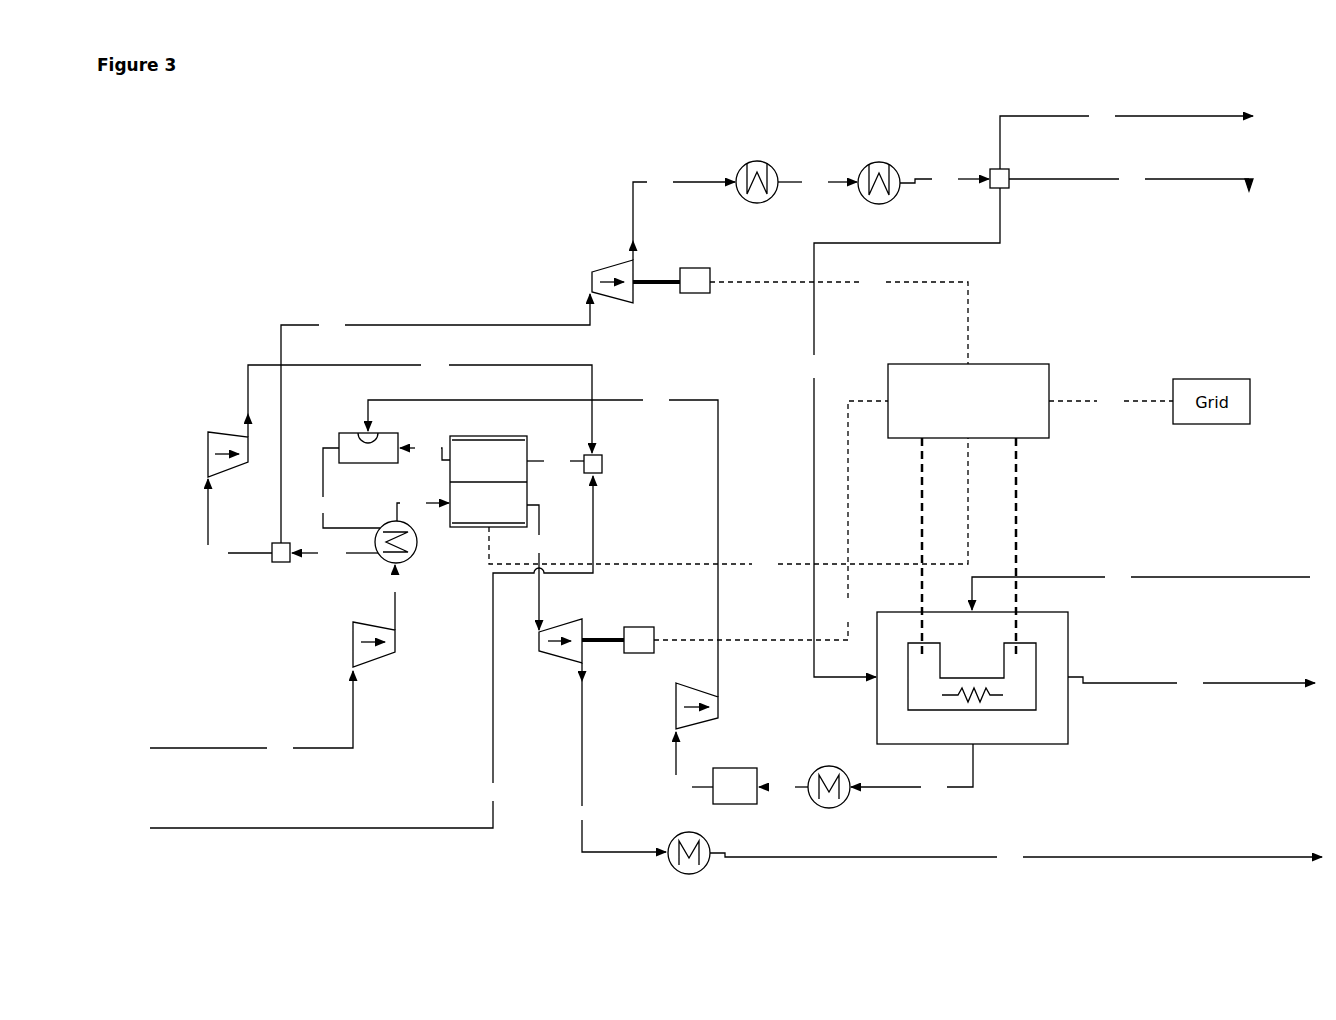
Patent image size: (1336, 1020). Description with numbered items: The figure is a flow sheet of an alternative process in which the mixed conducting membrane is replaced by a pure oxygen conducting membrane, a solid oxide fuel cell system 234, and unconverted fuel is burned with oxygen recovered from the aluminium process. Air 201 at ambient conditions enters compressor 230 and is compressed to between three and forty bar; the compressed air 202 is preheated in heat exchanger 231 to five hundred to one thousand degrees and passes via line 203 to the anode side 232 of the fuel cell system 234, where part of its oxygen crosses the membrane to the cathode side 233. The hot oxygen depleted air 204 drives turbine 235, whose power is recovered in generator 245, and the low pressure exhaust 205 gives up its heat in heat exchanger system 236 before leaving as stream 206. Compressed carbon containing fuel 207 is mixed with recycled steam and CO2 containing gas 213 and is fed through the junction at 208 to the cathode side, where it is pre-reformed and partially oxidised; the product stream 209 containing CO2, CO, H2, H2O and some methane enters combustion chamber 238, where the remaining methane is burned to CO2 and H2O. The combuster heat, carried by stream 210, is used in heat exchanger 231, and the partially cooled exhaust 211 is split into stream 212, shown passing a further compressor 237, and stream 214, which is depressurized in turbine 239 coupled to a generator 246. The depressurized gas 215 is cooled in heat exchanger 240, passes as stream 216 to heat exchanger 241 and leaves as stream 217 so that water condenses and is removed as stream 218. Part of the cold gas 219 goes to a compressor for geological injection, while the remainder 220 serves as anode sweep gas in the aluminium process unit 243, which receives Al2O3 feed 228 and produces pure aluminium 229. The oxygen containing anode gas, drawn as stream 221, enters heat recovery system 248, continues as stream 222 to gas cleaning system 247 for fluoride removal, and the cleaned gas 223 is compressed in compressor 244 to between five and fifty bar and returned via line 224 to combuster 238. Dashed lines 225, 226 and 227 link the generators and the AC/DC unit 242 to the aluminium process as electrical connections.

The air stream 201 is at (251, 713).
The compressed air stream 202 is at (395, 597).
The heated feed line to reformer 203 is at (423, 508).
The hot oxygen depleted air stream 204 is at (538, 567).
The exhaust gas stream 205 is at (619, 757).
The product line 206 is at (1016, 857).
The compressed carbon containing fuel stream 207 is at (371, 652).
The outlet line from upper section 208 is at (564, 463).
The fuel cell outlet stream 209 is at (425, 450).
The separator outlet line 210 is at (346, 488).
The partially cooled exhaust gas stream 211 is at (335, 553).
The split exhaust gas stream 212 is at (246, 520).
The recycled steam and CO2 containing gas stream 213 is at (420, 405).
The exhaust gas stream to turbine 214 is at (435, 418).
The depressurized exhaust gas stream 215 is at (684, 217).
The line between heat exchangers 216 is at (817, 182).
The cooled exhaust line 217 is at (954, 178).
The condensed water stream 218 is at (1126, 139).
The cold exhaust gas stream for injection 219 is at (1131, 181).
The anode sweep gas stream 220 is at (901, 432).
The Al-process outlet line 221 is at (912, 769).
The pumped line 222 is at (783, 787).
The cleaned gas stream 223 is at (690, 763).
The compressed line to separator 224 is at (543, 545).
The electric power line from generator 225 is at (771, 520).
The electric power line 226 is at (941, 341).
The electric power line 227 is at (728, 504).
The Al2O3 stream 228 is at (1141, 590).
The pure aluminium stream 229 is at (1191, 683).
The compressor 230 is at (385, 652).
The heat exchanger 231 is at (412, 549).
The anode side 232 is at (488, 510).
The cathode side 233 is at (488, 455).
The solid oxide fuel cell system 234 is at (488, 468).
The turbine 235 is at (574, 651).
The heat exchanger system 236 is at (689, 869).
The compressor 237 is at (228, 464).
The combustion chamber 238 is at (358, 439).
The turbine 239 is at (623, 276).
The heat exchanger 240 is at (756, 170).
The heat exchanger 241 is at (879, 172).
The AC/DC converter 242 is at (968, 390).
The aluminium process unit 243 is at (989, 591).
The compressor 244 is at (718, 706).
The generator 245 is at (635, 651).
The generator 246 is at (694, 295).
The gas cleaning system 247 is at (735, 786).
The heat recovery system 248 is at (850, 793).